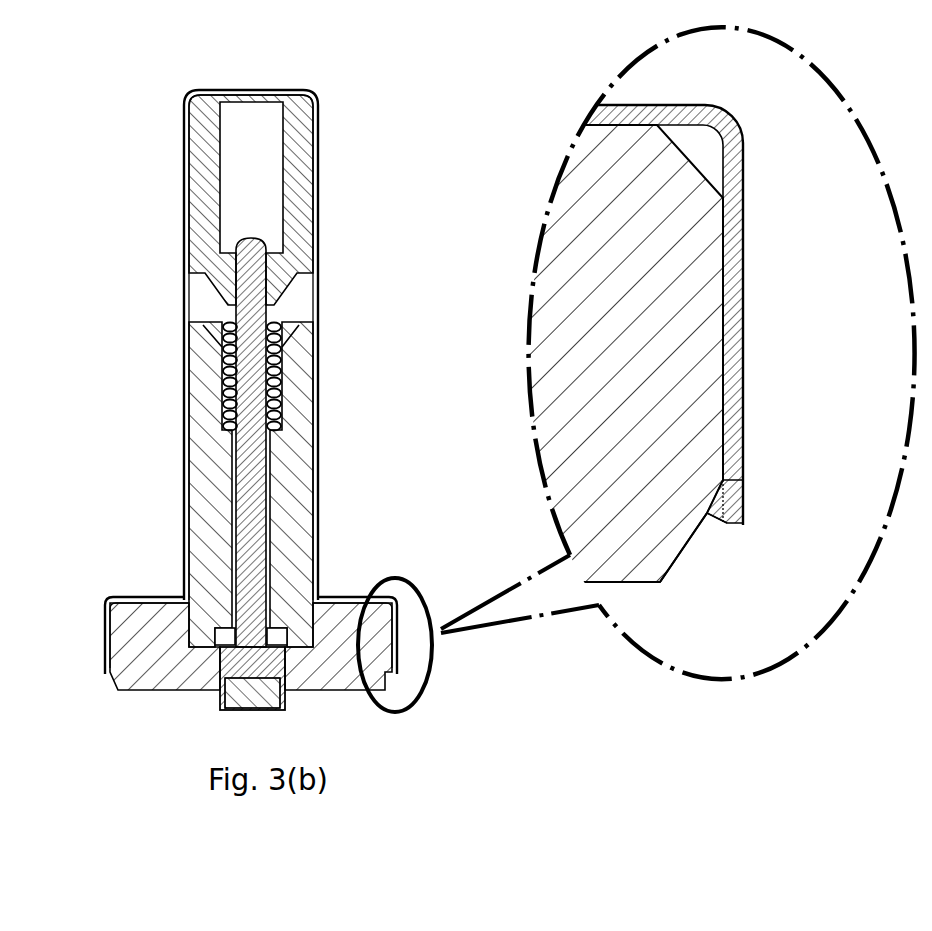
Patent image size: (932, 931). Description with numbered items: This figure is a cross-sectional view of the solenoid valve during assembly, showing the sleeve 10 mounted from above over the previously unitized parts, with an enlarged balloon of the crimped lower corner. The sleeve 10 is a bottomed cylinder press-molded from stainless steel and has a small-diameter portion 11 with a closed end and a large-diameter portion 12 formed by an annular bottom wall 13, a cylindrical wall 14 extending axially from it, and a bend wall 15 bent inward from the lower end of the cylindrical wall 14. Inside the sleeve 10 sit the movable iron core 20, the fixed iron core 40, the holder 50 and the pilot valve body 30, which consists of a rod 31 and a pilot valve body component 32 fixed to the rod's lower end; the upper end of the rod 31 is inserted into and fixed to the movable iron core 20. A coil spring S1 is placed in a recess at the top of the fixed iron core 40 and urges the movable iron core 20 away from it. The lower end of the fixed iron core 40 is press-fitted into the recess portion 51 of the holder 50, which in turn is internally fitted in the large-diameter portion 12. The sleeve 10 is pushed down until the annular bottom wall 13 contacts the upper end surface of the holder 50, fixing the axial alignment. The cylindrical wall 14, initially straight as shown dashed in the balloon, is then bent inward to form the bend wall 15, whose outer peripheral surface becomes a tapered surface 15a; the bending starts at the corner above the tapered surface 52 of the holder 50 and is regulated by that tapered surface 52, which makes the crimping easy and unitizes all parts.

The sleeve 10 is at (482, 233).
The small-diameter portion 11 is at (322, 287).
The large-diameter portion 12 is at (520, 272).
The annular bottom wall 13 is at (337, 595).
The cylindrical wall 14 is at (428, 612).
The bend wall 15 is at (733, 498).
The tapered surface 15a is at (725, 523).
The movable iron core 20 is at (312, 92).
The coil spring S1 is at (205, 330).
The pilot valve body 30 is at (75, 475).
The rod 31 is at (233, 468).
The pilot valve body component 32 is at (207, 641).
The fixed iron core 40 is at (207, 408).
The holder 50 is at (133, 643).
The recess portion 51 is at (220, 702).
The tapered surface 52 is at (683, 547).